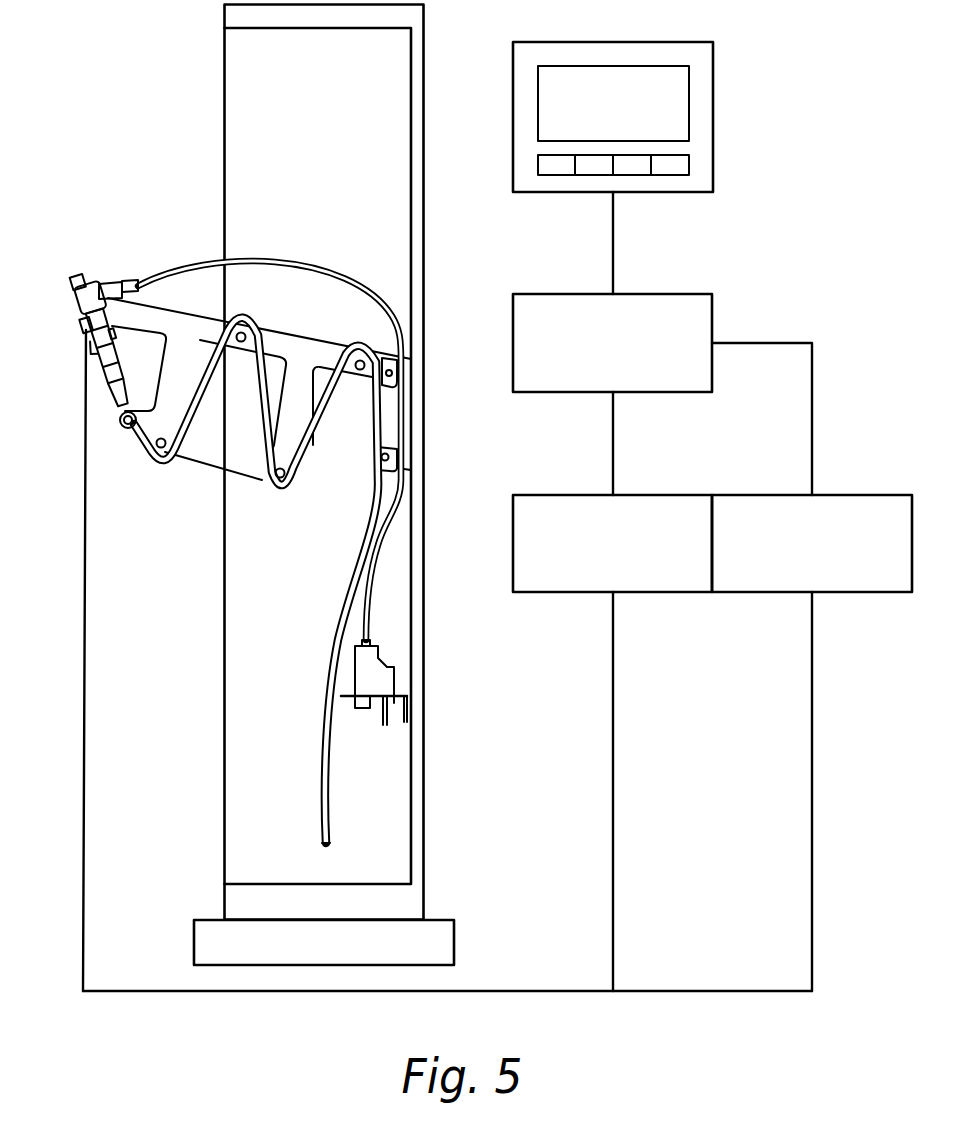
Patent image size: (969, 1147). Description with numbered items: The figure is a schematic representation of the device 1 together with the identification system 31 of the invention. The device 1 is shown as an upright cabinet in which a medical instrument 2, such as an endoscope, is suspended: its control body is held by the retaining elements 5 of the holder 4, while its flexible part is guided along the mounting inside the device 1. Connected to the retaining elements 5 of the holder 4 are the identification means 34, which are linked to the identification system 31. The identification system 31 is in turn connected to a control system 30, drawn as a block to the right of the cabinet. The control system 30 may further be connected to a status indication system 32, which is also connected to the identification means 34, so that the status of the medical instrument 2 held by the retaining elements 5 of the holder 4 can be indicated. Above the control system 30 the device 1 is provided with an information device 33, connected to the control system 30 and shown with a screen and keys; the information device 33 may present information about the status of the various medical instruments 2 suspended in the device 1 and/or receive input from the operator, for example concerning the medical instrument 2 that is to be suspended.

The device 1 is at (158, 77).
The medical instrument 2 is at (177, 258).
The holder 4 is at (99, 279).
The retaining elements 5 is at (74, 301).
The identification means 34 is at (81, 324).
The control system 30 is at (596, 357).
The identification system 31 is at (596, 558).
The status indication system 32 is at (796, 558).
The information device 33 is at (596, 116).